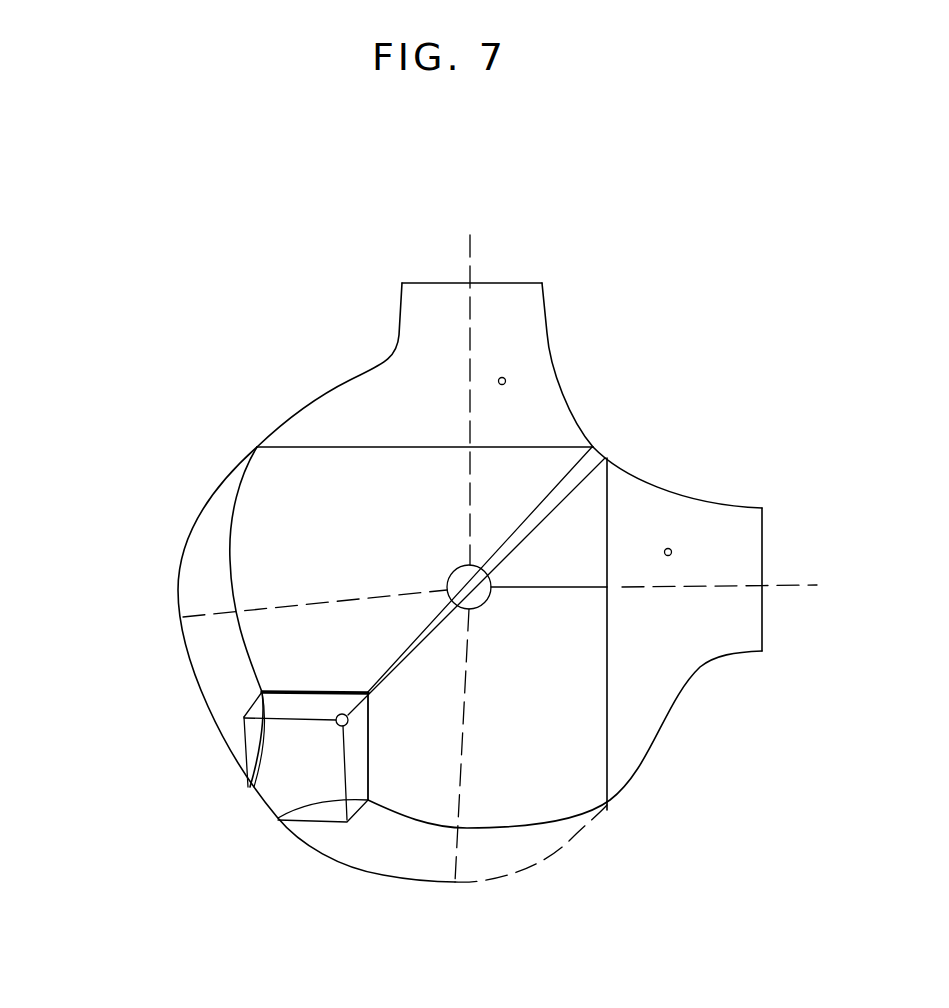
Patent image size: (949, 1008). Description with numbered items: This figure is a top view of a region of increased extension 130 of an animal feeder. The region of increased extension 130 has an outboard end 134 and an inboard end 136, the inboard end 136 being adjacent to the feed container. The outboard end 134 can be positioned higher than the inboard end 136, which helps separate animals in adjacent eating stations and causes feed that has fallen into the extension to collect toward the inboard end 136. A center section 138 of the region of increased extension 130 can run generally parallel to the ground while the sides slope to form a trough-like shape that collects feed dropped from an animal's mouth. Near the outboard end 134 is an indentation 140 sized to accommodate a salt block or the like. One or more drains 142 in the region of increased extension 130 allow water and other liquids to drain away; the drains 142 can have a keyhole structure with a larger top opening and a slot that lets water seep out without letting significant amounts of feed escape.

The region of increased extension 130 is at (205, 460).
The outboard end 134 is at (200, 712).
The inboard end 136 is at (633, 472).
The center section 138 is at (413, 637).
The indentation 140 is at (280, 785).
The drains 142 is at (502, 377).